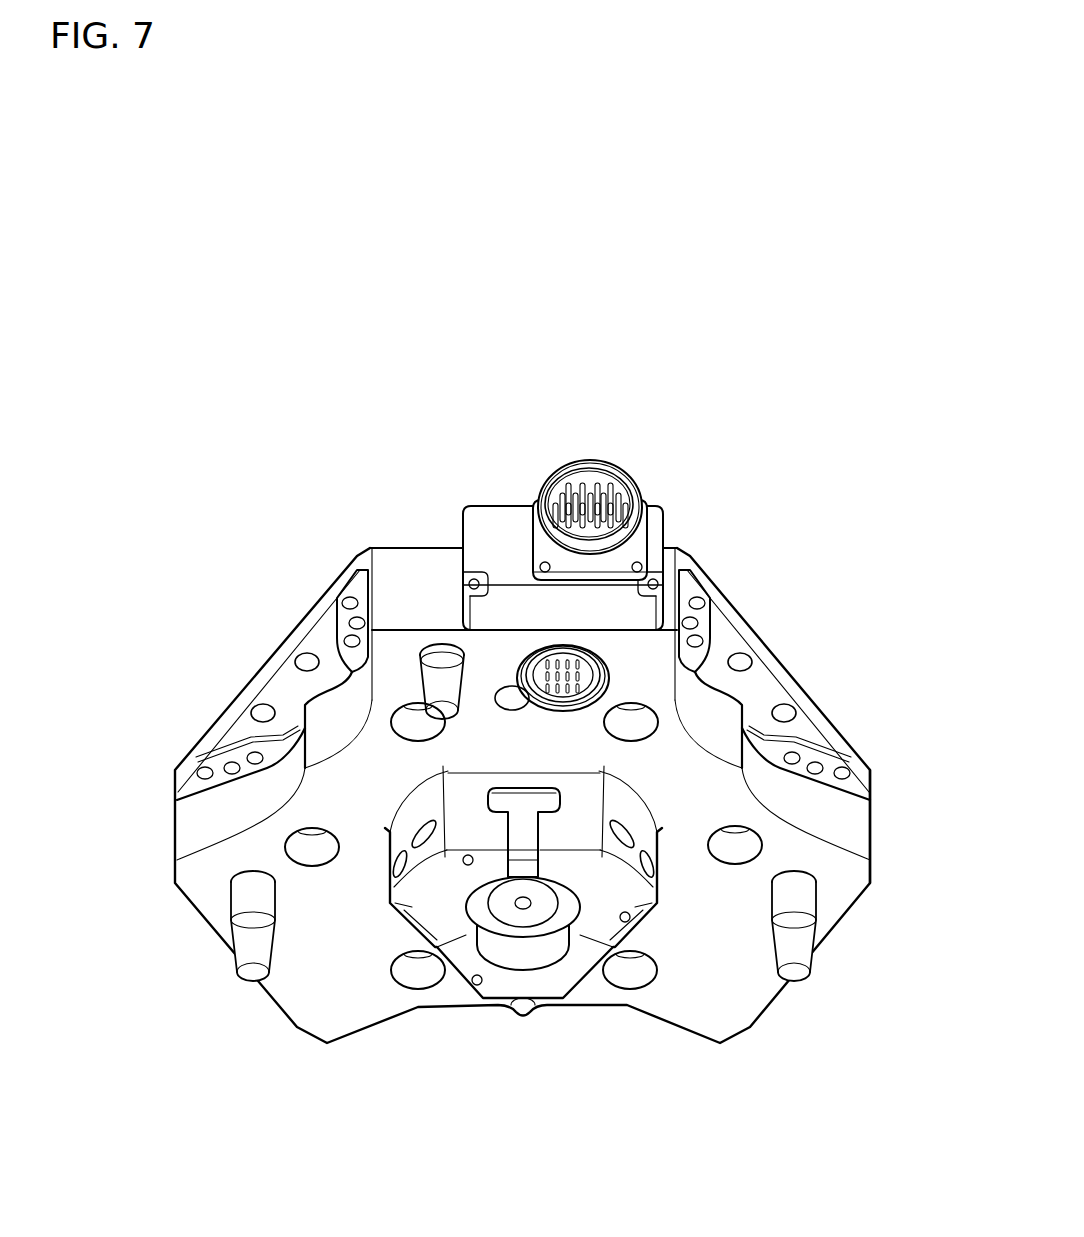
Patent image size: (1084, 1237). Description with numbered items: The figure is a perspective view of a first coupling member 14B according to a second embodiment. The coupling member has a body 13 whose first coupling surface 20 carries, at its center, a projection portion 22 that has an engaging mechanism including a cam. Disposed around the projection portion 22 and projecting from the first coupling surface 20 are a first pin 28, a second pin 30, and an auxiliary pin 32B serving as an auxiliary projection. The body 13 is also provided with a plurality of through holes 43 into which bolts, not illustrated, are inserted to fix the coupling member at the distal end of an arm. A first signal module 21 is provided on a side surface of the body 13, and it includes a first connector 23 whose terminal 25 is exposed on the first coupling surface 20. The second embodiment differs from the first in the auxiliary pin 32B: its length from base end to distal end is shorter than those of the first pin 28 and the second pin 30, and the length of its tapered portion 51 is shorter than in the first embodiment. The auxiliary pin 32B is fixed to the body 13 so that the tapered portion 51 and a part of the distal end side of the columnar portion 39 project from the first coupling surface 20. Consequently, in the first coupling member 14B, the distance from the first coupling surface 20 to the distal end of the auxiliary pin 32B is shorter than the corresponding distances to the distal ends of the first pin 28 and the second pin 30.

The first coupling member 14B is at (803, 503).
The body 13 is at (866, 835).
The first coupling surface 20 is at (707, 890).
The first signal module 21 is at (517, 521).
The projection portion 22 is at (612, 895).
The first connector 23 is at (575, 660).
The terminal 25 is at (633, 732).
The first pin 28 is at (243, 901).
The second pin 30 is at (805, 900).
The auxiliary pin 32B is at (431, 690).
The columnar portion 39 is at (441, 652).
The through holes 43 is at (303, 847).
The tapered portion 51 is at (392, 738).